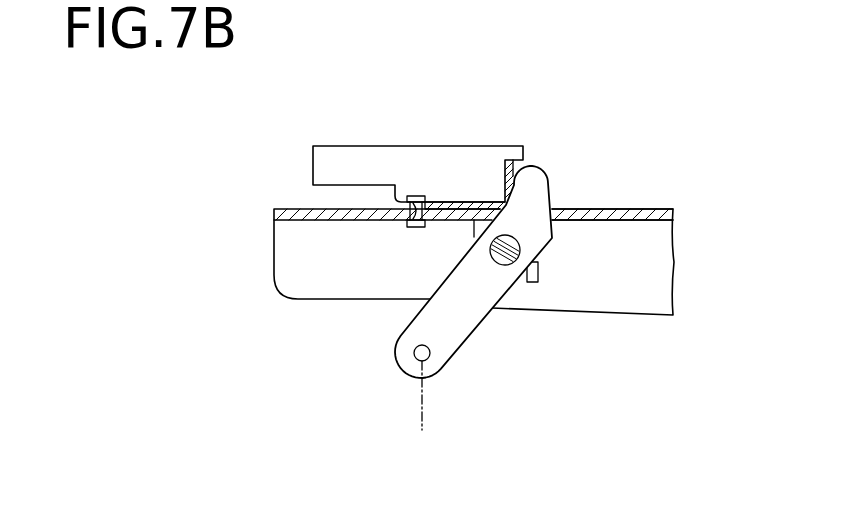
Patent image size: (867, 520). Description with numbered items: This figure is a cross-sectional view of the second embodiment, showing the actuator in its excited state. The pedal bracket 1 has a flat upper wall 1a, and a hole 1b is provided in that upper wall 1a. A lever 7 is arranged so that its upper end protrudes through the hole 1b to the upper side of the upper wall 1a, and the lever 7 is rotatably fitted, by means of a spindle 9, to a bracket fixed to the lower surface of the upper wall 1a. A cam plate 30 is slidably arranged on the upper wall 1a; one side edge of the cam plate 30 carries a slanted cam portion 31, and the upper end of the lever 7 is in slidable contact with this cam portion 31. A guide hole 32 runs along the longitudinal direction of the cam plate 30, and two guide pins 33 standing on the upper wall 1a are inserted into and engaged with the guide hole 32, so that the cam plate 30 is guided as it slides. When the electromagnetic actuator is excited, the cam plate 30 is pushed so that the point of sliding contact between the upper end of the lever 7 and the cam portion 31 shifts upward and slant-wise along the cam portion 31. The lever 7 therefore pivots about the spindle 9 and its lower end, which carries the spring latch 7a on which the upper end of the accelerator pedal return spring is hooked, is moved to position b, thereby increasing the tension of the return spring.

The pedal bracket 1 is at (621, 314).
The upper wall 1a is at (639, 207).
The hole 1b is at (562, 207).
The cam plate 30 is at (373, 146).
The cam portion 31 is at (507, 146).
The guide hole 32 is at (417, 228).
The guide pins 33 is at (413, 196).
The lever 7 is at (474, 330).
The spring latch 7a is at (427, 355).
The spindle 9 is at (518, 258).
The position b is at (424, 411).